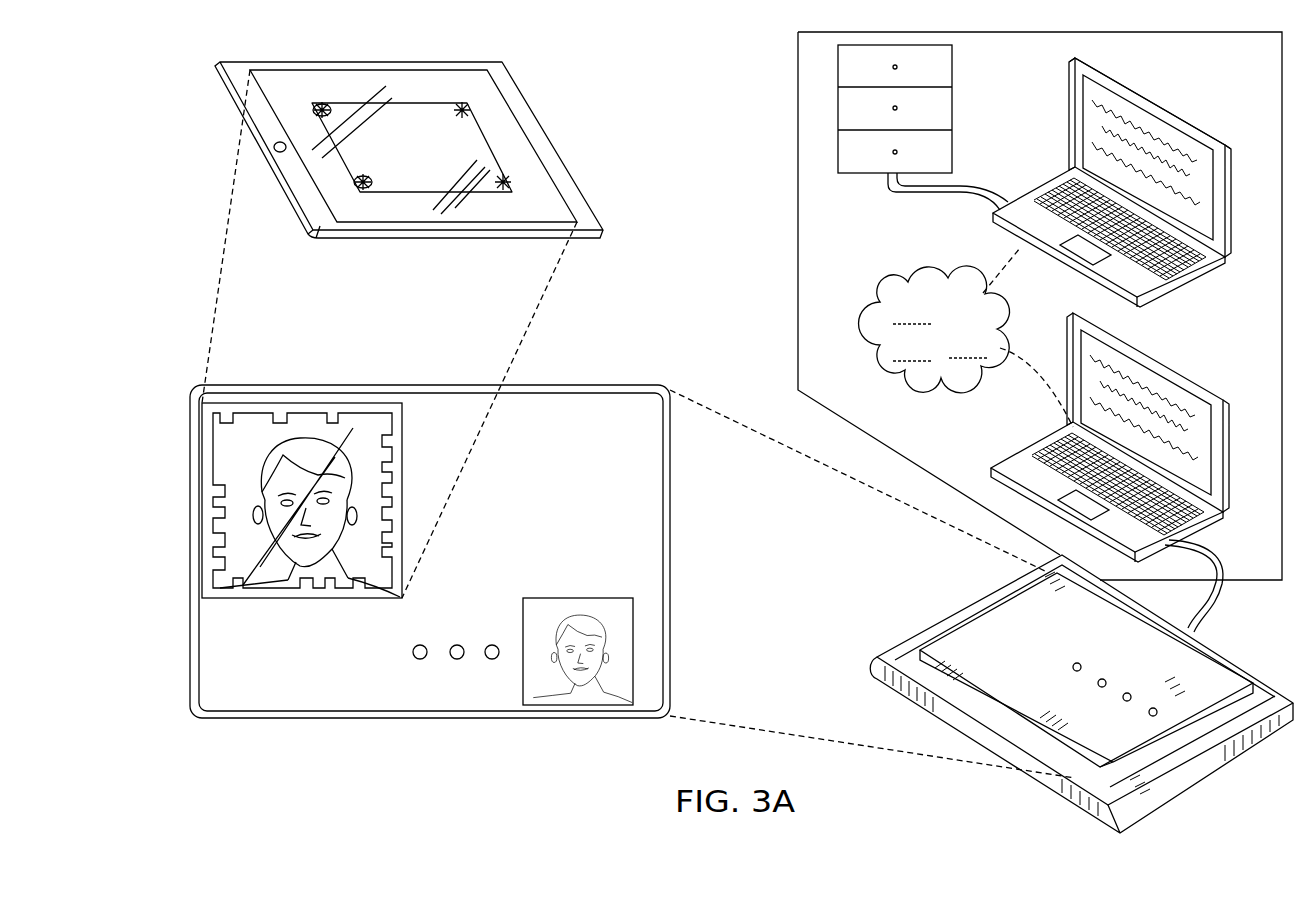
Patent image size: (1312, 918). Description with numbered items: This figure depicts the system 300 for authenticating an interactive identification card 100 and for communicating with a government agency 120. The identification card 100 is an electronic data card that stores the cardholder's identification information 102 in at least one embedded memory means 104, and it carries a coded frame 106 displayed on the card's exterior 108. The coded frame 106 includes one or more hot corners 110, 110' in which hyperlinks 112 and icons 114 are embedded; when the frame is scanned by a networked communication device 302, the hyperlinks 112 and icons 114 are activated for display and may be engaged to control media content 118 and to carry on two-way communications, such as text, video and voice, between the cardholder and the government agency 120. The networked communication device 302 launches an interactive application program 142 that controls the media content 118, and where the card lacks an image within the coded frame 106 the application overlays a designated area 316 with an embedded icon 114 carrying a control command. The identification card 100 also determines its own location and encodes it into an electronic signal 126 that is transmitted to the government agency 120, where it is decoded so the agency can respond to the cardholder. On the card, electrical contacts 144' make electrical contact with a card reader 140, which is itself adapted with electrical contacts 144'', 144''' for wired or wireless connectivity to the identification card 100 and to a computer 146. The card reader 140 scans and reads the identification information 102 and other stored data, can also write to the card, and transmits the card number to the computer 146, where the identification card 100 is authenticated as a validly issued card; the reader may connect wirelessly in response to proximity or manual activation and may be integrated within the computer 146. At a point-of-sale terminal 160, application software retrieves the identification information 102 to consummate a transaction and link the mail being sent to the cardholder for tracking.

The identification card 100 is at (343, 727).
The identification information 102 is at (912, 313).
The memory means 104 is at (953, 82).
The coded frame 106 is at (268, 403).
The card's exterior 108 is at (645, 663).
The hot corner 110 is at (538, 345).
The security feature 110' is at (386, 238).
The hyperlink 112 is at (512, 182).
The icon 114 is at (318, 233).
The media content 118 is at (452, 212).
The government agency 120 is at (797, 243).
The electronic signal 126 is at (890, 290).
The card reader 140 is at (1223, 687).
The interactive application program 142 is at (1170, 143).
The electrical contacts 144' is at (404, 704).
The electrical contacts 144'' is at (762, 668).
The electrical contacts 144''' is at (1211, 769).
The computer 146 is at (1143, 96).
The point-of-sale terminal 160 is at (1183, 370).
The system 300 is at (777, 103).
The networked communication device 302 is at (397, 58).
The designated area 316 is at (473, 138).